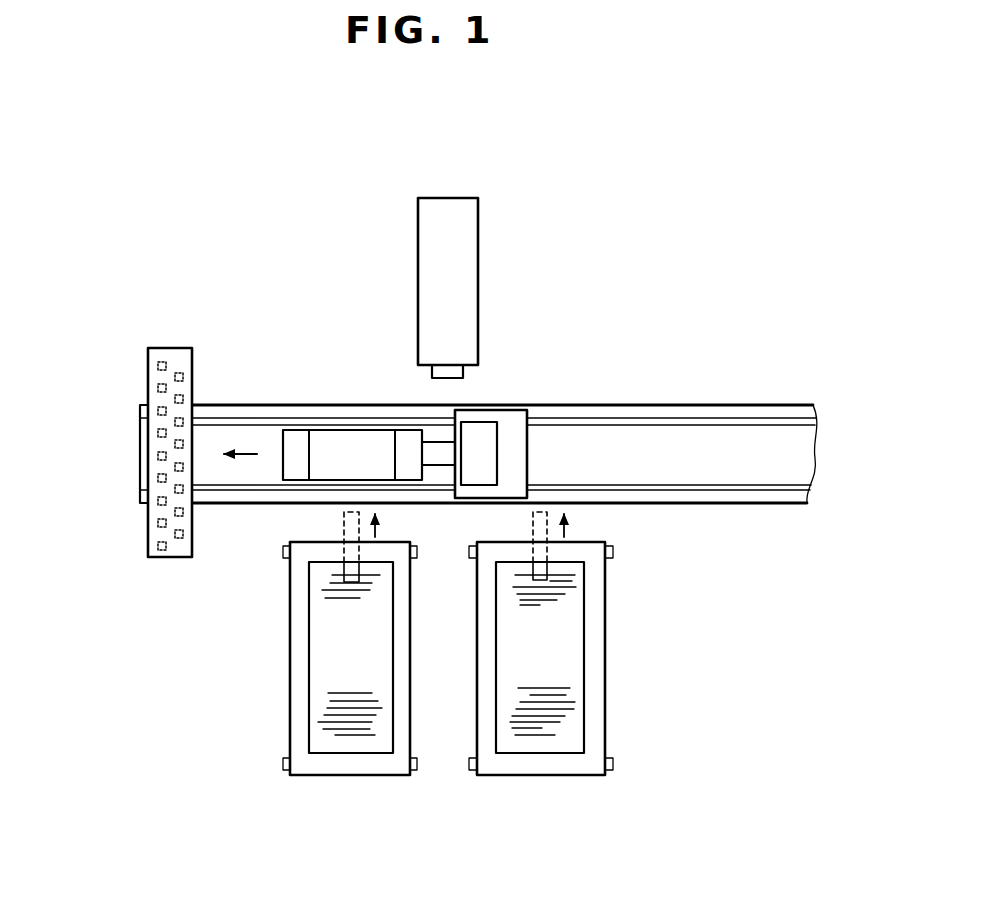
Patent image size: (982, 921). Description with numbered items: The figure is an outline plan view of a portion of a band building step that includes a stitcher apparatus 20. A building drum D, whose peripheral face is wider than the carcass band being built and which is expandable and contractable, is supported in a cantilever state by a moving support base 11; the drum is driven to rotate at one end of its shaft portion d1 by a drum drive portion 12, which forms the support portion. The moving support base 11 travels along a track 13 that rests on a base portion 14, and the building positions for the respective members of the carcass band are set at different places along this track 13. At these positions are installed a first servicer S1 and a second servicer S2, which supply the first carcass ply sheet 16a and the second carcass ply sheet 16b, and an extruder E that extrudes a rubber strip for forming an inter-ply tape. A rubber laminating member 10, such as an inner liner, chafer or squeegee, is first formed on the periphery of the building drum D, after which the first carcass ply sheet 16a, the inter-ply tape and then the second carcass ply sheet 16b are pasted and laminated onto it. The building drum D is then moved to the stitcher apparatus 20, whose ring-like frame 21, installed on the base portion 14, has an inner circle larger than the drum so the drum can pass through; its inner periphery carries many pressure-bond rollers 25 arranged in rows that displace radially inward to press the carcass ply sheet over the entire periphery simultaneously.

The rubber laminating member 10 is at (350, 445).
The building drum D is at (298, 441).
The shaft portion d1 is at (437, 450).
The moving support base 11 is at (510, 413).
The drum drive portion 12 is at (477, 442).
The track 13 is at (705, 487).
The base portion 14 is at (782, 408).
The extruder E is at (462, 240).
The stitcher apparatus 20 is at (140, 543).
The ring-like frame 21 is at (152, 350).
The pressure-bond rollers 25 is at (177, 445).
The first servicer S1 is at (612, 693).
The second servicer S2 is at (279, 689).
The first carcass ply sheet 16a is at (550, 630).
The second carcass ply sheet 16b is at (333, 620).